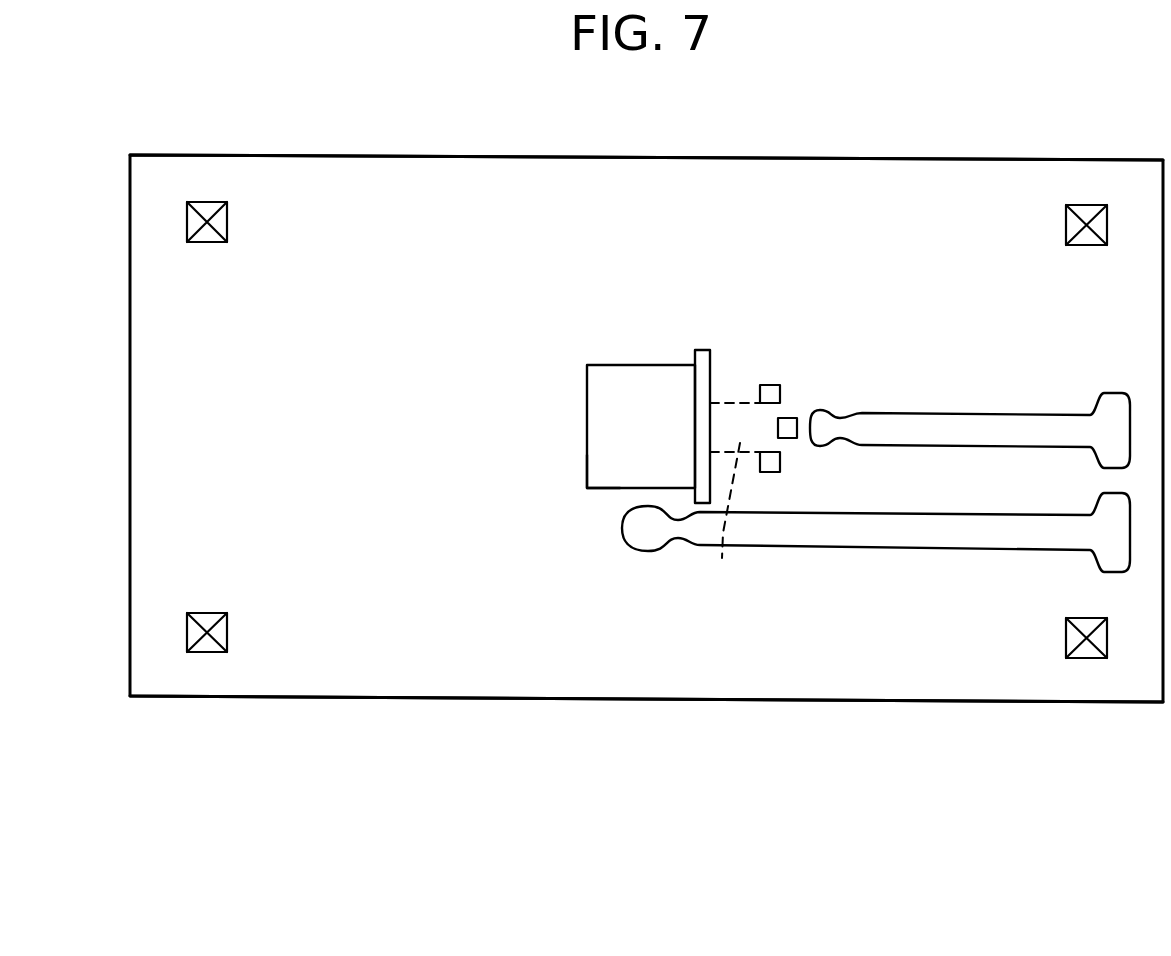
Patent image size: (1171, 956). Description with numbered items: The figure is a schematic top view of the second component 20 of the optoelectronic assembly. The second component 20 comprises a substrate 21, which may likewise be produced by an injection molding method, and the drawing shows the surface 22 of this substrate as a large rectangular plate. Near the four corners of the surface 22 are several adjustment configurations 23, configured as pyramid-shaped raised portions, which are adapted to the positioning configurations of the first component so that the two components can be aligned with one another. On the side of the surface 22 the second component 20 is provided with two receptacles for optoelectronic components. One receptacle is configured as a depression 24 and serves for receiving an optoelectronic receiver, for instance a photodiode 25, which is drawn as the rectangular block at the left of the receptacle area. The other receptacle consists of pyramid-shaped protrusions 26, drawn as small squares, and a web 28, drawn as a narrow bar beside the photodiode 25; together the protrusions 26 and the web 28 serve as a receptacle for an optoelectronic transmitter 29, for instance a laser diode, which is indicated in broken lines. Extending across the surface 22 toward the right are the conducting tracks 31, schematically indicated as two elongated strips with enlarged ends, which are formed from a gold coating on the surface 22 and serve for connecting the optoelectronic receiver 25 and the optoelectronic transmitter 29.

The second component 20 is at (593, 712).
The substrate 21 is at (703, 668).
The surface 22 is at (512, 182).
The adjustment configurations 23 is at (209, 210).
The depression 24 is at (613, 478).
The photodiode 25 is at (635, 387).
The pyramid-shaped protrusions 26 is at (797, 418).
The web 28 is at (707, 375).
The optoelectronic transmitter 29 is at (722, 558).
The conducting tracks 31 is at (988, 430).